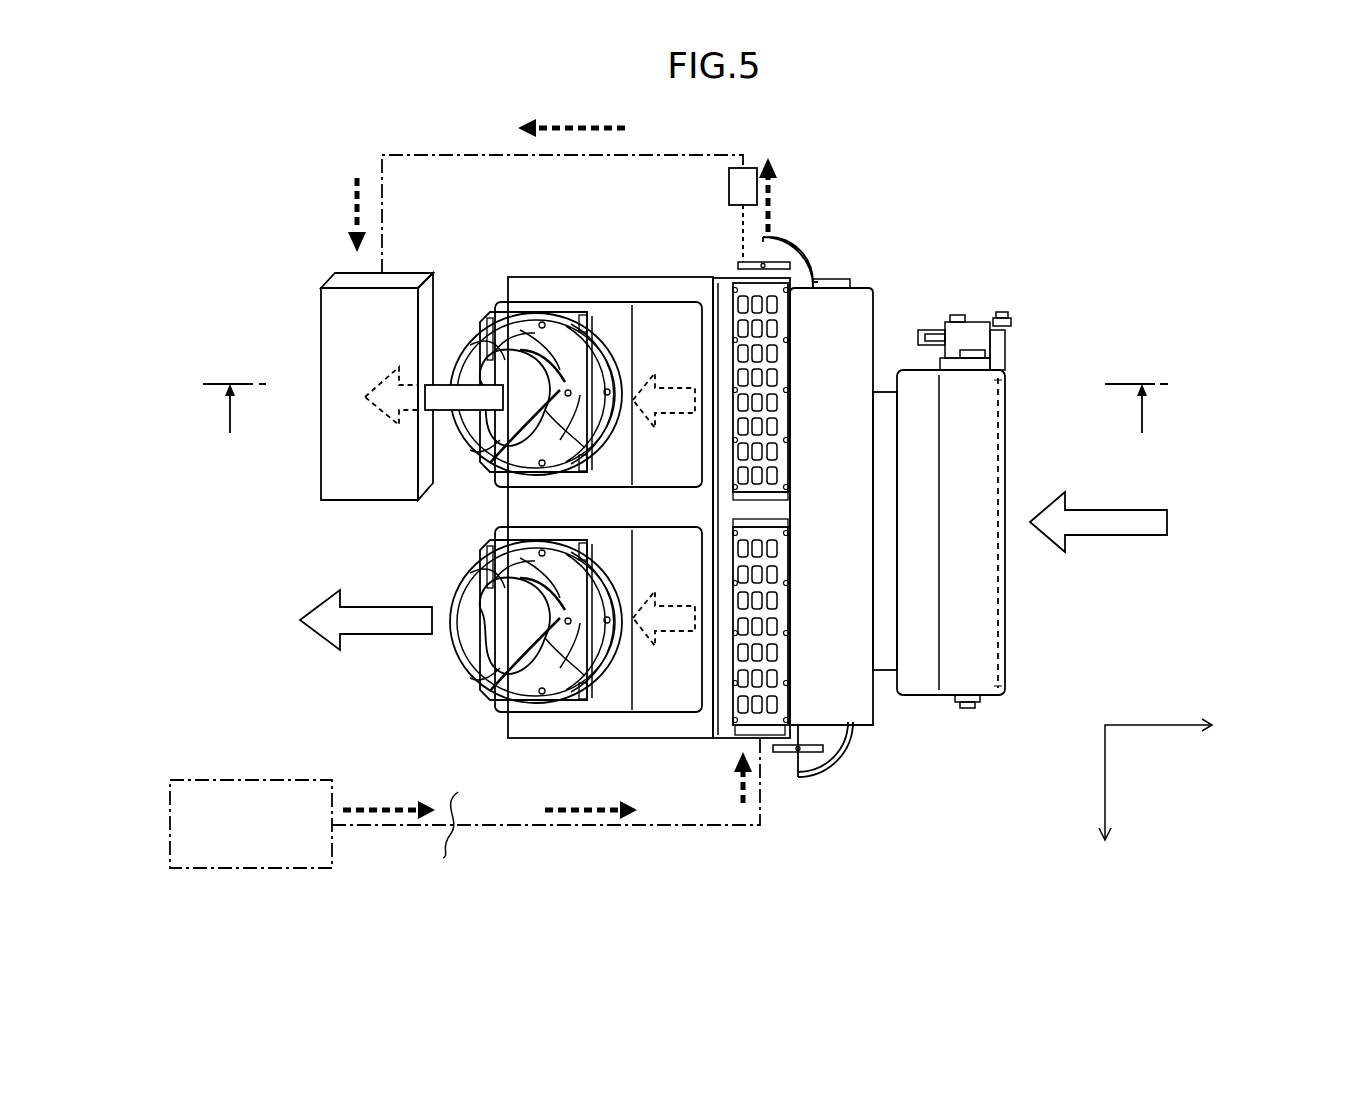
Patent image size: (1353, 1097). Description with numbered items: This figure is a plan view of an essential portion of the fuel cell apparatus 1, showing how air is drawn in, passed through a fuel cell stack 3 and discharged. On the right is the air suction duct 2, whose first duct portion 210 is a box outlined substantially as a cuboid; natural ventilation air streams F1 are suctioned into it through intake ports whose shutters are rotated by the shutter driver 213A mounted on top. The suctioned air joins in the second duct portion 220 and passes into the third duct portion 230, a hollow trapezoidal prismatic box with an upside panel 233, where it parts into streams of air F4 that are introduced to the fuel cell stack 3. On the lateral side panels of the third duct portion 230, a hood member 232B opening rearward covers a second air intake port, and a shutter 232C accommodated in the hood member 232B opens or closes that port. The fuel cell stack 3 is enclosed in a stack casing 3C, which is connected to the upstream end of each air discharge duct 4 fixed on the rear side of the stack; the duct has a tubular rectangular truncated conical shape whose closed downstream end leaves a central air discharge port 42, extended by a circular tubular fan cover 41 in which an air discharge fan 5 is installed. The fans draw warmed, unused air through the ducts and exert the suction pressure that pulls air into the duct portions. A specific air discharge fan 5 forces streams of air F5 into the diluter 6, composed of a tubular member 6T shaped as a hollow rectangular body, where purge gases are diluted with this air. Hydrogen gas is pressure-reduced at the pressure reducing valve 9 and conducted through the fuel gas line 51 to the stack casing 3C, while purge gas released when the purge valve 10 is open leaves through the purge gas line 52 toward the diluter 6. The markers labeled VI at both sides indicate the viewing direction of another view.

The fuel cell apparatus 1 is at (997, 165).
The air suction duct 2 is at (841, 484).
The fuel cell stack 3 is at (788, 484).
The stack casing 3C is at (791, 330).
The air discharge duct 4 is at (604, 504).
The air discharge fan 5 is at (503, 501).
The diluter 6 is at (341, 426).
The tubular member 6T is at (348, 501).
The pressure reducing valve 9 is at (240, 779).
The purge valve 10 is at (749, 166).
The fan cover 41 is at (578, 330).
The air discharge port 42 is at (478, 325).
The fuel gas line 51 is at (512, 829).
The purge gas line 52 is at (441, 154).
The first duct portion 210 is at (946, 716).
The shutter driver 213A is at (978, 330).
The second duct portion 220 is at (879, 695).
The third duct portion 230 is at (856, 732).
The hood member 232B is at (787, 240).
The shutter 232C is at (745, 261).
The upside panel 233 is at (838, 318).
The natural ventilation air streams F1 is at (1120, 537).
The streams of air F4 is at (677, 387).
The streams of air F5 is at (472, 368).
The section line VI is at (685, 427).